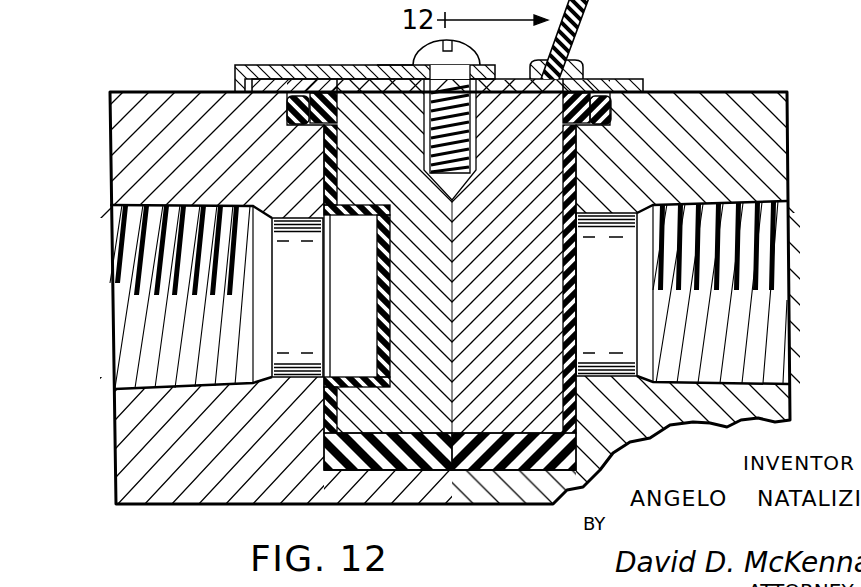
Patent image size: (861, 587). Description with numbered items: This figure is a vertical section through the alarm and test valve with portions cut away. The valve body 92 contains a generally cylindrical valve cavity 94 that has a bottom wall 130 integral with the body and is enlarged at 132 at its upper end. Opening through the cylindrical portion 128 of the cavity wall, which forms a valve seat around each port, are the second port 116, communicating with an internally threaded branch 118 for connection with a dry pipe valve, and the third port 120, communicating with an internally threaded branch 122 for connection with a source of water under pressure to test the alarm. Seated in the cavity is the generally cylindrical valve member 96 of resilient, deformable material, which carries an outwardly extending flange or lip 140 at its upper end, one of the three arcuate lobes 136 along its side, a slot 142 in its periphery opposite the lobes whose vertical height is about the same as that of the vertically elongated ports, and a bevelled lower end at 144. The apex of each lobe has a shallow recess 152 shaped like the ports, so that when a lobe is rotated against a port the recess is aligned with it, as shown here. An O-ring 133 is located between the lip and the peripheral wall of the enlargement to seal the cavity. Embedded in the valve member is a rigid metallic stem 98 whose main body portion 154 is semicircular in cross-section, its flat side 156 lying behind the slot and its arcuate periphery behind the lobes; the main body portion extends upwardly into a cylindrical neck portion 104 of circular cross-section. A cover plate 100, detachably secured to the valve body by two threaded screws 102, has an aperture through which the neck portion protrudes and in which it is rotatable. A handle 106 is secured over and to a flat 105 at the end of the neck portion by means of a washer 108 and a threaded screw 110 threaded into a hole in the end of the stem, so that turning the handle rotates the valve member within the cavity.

The valve body 92 is at (750, 100).
The valve cavity 94 is at (330, 412).
The valve member 96 is at (324, 163).
The stem 98 is at (480, 258).
The cover plate 100 is at (293, 65).
The threaded screw 102 is at (583, 62).
The neck portion 104 is at (383, 67).
The flat 105 is at (412, 80).
The handle 106 is at (318, 91).
The washer 108 is at (493, 65).
The threaded screw 110 is at (456, 44).
The second port 116 is at (280, 271).
The internally threaded branch 118 is at (130, 320).
The third port 120 is at (606, 294).
The internally threaded branch 122 is at (777, 240).
The cylindrical portion of the cavity wall 128 is at (572, 195).
The bottom wall 130 is at (520, 493).
The enlargement 132 is at (287, 110).
The O-ring 133 is at (647, 93).
The lobe 136 is at (575, 162).
The flange or lip 140 is at (330, 92).
The slot 142 is at (377, 307).
The bevel 144 is at (332, 453).
The shallow recess 152 is at (587, 322).
The main body portion 154 is at (504, 398).
The flat side 156 is at (376, 282).